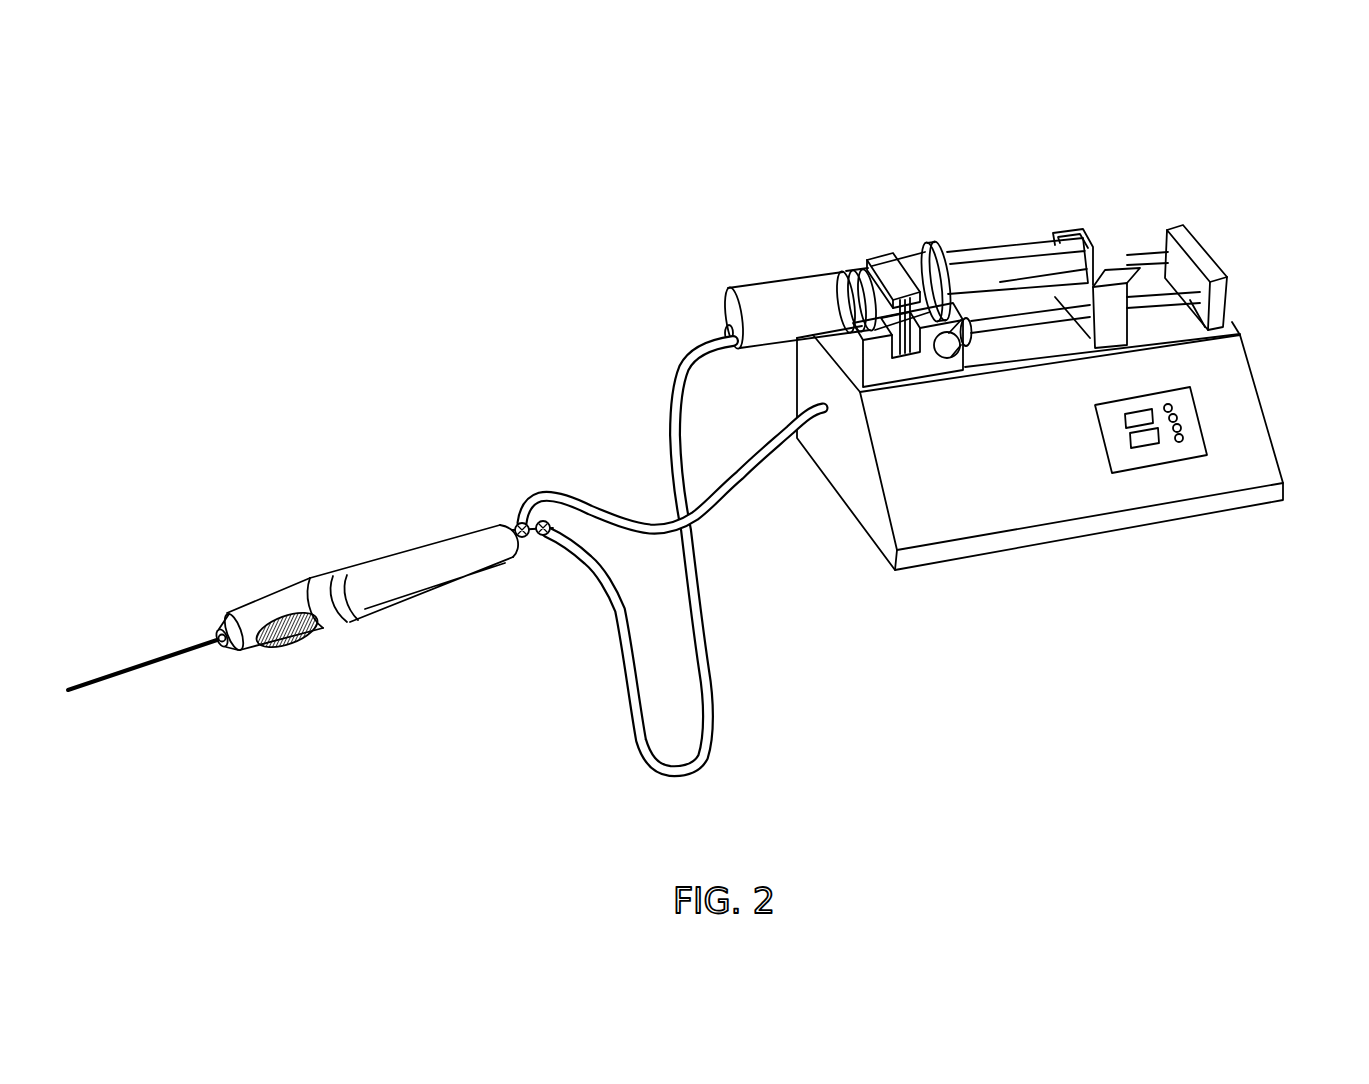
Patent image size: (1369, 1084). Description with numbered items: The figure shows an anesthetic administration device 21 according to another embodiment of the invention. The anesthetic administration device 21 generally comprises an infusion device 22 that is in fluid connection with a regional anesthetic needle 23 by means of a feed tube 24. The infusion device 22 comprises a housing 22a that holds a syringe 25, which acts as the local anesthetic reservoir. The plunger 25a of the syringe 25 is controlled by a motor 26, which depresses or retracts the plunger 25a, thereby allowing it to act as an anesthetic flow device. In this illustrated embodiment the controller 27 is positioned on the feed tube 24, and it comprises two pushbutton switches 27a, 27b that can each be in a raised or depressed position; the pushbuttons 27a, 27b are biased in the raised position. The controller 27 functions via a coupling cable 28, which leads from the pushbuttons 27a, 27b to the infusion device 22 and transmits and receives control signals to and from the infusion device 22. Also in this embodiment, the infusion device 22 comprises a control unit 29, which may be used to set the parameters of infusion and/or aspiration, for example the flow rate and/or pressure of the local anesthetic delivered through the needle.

The anesthetic administration device 21 is at (1256, 98).
The infusion device 22 is at (1295, 577).
The housing 22a is at (1233, 435).
The regional anesthetic needle 23 is at (56, 596).
The feed tube 24 is at (690, 768).
The syringe 25 is at (812, 273).
The plunger 25a is at (1007, 243).
The motor 26 is at (1105, 278).
The controller 27 is at (503, 496).
The pushbutton switch 27a is at (523, 538).
The pushbutton switch 27b is at (545, 536).
The coupling cable 28 is at (722, 492).
The control unit 29 is at (1190, 411).